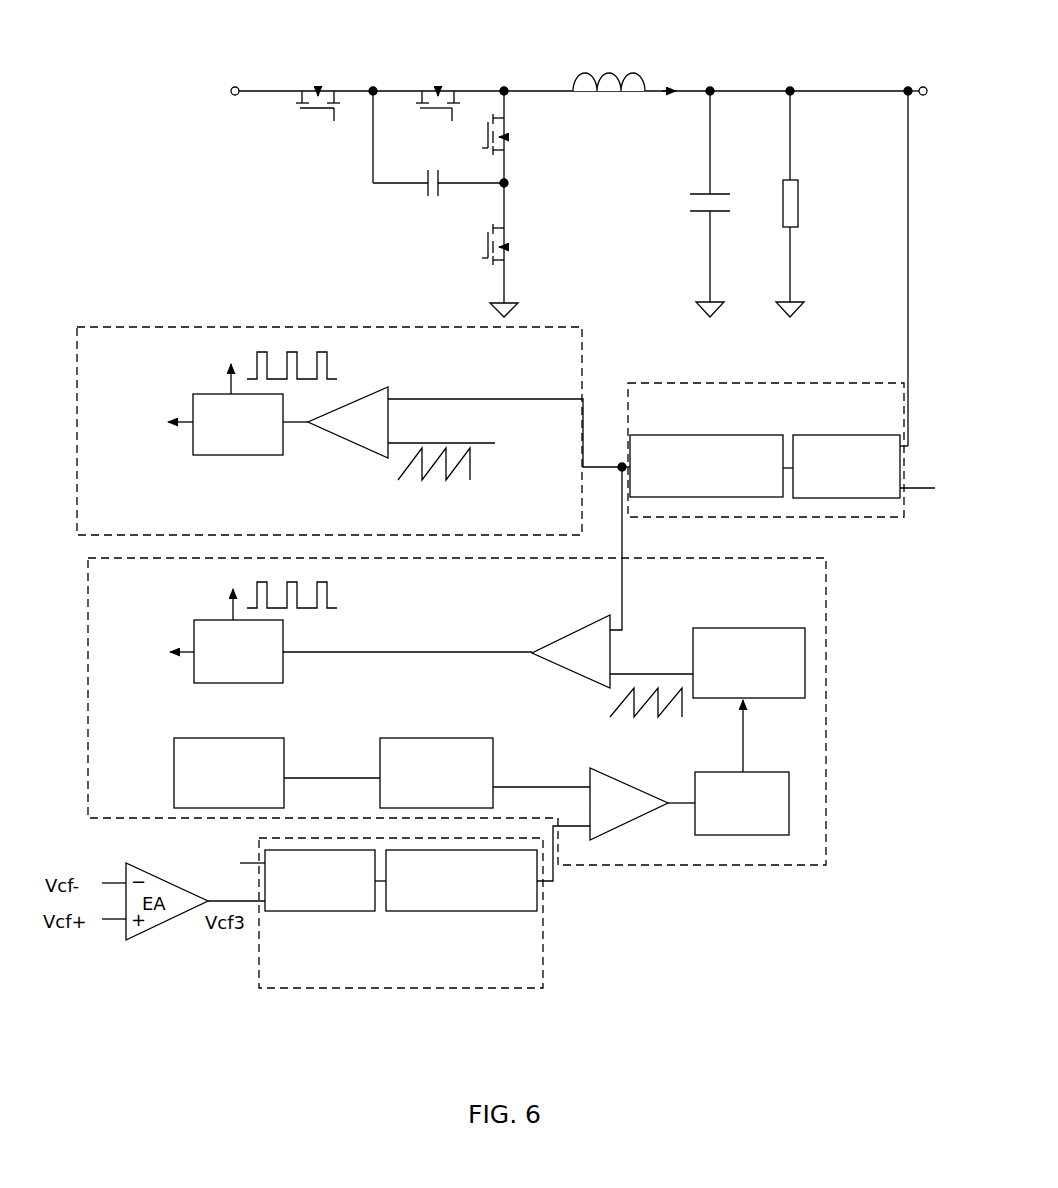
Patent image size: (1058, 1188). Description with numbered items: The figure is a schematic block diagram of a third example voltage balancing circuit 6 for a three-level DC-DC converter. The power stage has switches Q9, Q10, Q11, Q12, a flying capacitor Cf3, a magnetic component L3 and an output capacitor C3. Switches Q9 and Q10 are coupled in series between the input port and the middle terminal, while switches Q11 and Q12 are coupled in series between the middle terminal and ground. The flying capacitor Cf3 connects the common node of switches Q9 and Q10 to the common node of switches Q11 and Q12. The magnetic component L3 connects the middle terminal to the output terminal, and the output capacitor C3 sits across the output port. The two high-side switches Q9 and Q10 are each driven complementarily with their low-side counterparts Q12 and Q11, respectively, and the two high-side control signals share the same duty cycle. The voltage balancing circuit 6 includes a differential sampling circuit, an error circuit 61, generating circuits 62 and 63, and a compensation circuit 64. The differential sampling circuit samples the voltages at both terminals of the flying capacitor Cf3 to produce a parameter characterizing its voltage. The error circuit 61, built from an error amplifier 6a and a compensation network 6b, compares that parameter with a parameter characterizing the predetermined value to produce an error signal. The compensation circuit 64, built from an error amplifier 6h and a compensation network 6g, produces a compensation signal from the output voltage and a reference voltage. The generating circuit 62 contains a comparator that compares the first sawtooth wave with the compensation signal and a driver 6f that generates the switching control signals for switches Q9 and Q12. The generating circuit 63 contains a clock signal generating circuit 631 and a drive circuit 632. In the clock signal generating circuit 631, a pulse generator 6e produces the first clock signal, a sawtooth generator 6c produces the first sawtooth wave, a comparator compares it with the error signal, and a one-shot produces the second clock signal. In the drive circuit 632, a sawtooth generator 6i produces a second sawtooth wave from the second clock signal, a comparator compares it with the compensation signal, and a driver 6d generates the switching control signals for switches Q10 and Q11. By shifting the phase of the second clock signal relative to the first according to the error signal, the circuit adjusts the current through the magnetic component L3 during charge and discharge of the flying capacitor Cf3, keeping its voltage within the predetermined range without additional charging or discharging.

The voltage balancing circuit 6 is at (876, 618).
The error circuit 61 is at (536, 985).
The generating circuit 62 is at (110, 362).
The generating circuit 63 is at (826, 689).
The clock signal generating circuit 631 is at (342, 725).
The drive circuit 632 is at (397, 613).
The compensation circuit 64 is at (660, 415).
The error amplifier 6a is at (303, 911).
The compensation network 6b is at (413, 911).
The sawtooth generator 6c is at (445, 738).
The driver 6d is at (249, 677).
The pulse generator 6e is at (174, 753).
The driver 6f is at (248, 450).
The compensation network 6g is at (767, 491).
The error amplifier 6h is at (818, 435).
The sawtooth generator 6i is at (730, 628).
The switch Q9 is at (318, 92).
The switch Q10 is at (437, 92).
The switch Q11 is at (524, 137).
The switch Q12 is at (517, 250).
The magnetic component L3 is at (609, 68).
The output capacitor C3 is at (724, 204).
The flying capacitor Cf3 is at (438, 156).